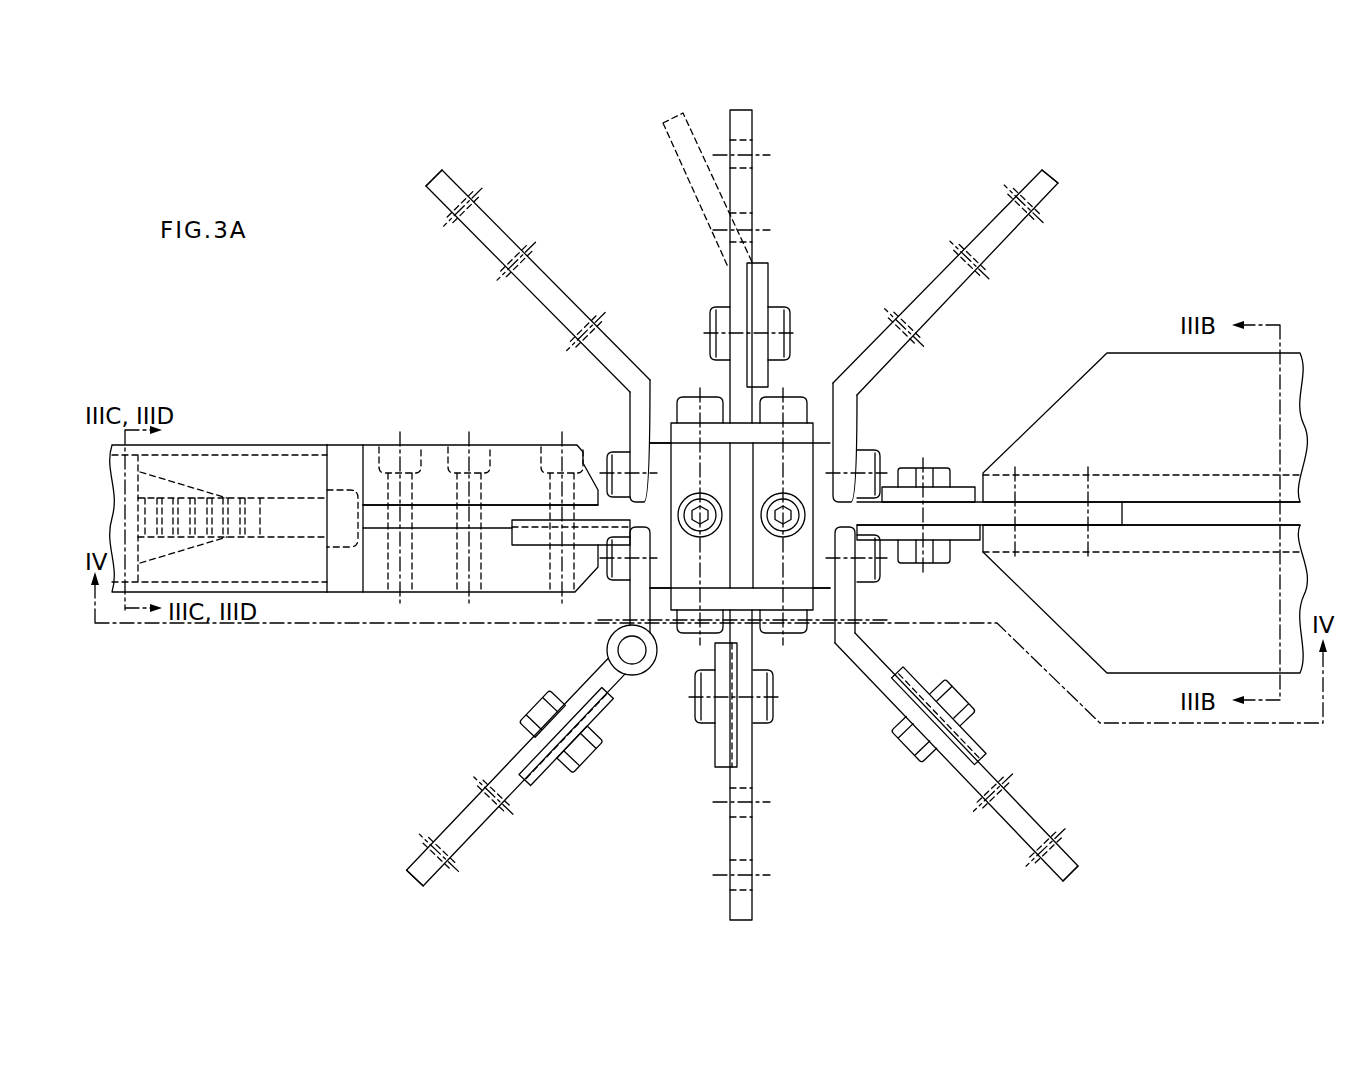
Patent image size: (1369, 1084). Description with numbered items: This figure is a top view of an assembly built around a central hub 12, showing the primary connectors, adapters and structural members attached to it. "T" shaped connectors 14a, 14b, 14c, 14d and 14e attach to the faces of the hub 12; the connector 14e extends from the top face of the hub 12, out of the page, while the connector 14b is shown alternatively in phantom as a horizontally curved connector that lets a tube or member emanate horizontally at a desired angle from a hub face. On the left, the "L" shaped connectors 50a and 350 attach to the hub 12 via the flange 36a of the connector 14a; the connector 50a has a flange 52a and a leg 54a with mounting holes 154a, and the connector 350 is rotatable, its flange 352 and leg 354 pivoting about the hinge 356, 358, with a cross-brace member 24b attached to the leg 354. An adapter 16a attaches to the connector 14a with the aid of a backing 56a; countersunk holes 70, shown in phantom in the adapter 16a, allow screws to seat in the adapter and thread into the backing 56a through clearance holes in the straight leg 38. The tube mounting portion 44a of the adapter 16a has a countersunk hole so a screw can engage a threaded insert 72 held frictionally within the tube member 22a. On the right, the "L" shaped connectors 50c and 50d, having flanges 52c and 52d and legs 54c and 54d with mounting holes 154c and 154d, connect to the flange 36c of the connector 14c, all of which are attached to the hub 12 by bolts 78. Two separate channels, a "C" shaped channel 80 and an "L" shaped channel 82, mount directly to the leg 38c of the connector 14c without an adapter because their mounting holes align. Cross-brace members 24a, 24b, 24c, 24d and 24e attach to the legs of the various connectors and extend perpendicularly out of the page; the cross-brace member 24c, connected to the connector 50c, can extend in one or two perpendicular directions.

The hub 12 is at (815, 440).
The "T" shaped connector 14a is at (437, 499).
The "T" shaped connector 14b is at (688, 205).
The "T" shaped connector 14c is at (1000, 493).
The "T" shaped connector 14d is at (758, 771).
The "T" shaped connector 14e is at (800, 570).
The adapter 16a is at (363, 443).
The tube member 22a is at (263, 445).
The cross-brace member 24a is at (530, 537).
The cross-brace member 24b is at (763, 287).
The cross-brace member 24c is at (977, 737).
The cross-brace member 24d is at (720, 752).
The cross-brace member 24e is at (963, 545).
The flange 36a is at (630, 407).
The flange 36c is at (824, 577).
The straight leg 38 is at (440, 520).
The leg 38c is at (1053, 517).
The tube mounting portion 44a is at (355, 570).
The "L" shaped connector 50a is at (440, 174).
The "L" shaped connector 50c is at (1087, 871).
The "L" shaped connector 50d is at (1050, 164).
The flange 52a is at (663, 450).
The flange 52c is at (847, 605).
The flange 52d is at (857, 413).
The leg 54a is at (497, 227).
The leg 54c is at (957, 777).
The leg 54d is at (1000, 247).
The backing 56a is at (423, 593).
The countersunk holes 70 is at (380, 462).
The threaded insert 72 is at (197, 490).
The bolts 78 is at (607, 463).
The channel 80 is at (1189, 424).
The channel 82 is at (1189, 616).
The mounting holes 154a is at (560, 342).
The mounting holes 154c is at (1053, 837).
The mounting holes 154d is at (892, 317).
The rotatable "L" shaped connector 350 is at (403, 870).
The flange 352 is at (630, 600).
The leg 354 is at (470, 830).
The hinge 356 is at (643, 665).
The hinge 358 is at (643, 665).